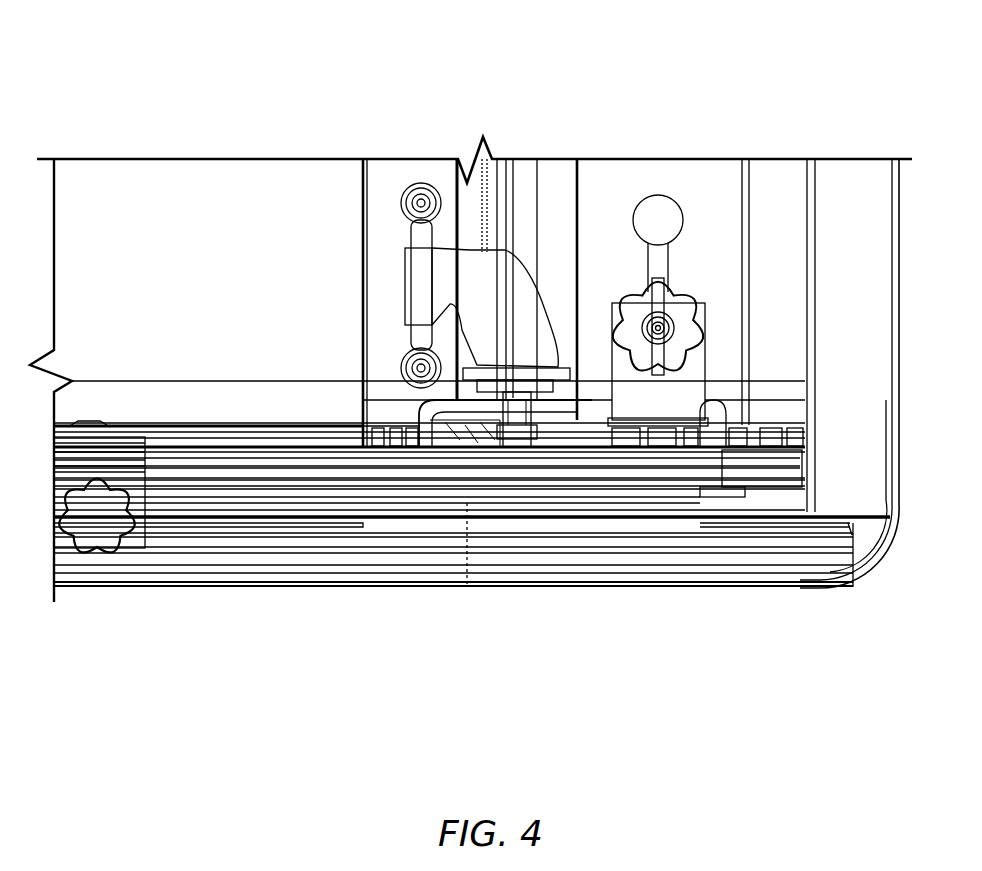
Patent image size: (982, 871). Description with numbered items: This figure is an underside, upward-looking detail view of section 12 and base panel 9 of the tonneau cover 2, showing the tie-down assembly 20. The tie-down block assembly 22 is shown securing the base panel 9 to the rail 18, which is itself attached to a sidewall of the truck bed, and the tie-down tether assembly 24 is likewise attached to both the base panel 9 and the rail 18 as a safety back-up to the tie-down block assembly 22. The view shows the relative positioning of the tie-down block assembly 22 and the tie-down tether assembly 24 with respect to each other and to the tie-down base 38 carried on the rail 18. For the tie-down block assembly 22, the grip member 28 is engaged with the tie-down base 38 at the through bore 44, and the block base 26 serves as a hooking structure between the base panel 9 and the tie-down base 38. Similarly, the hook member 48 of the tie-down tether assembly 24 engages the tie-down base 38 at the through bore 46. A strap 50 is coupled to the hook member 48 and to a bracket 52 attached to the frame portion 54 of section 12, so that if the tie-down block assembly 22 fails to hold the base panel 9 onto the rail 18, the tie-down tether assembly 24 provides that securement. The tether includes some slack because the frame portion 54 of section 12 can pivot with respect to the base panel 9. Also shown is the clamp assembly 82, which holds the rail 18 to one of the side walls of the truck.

The truck bed cover 2 is at (777, 100).
The base panel 9 is at (915, 225).
The section 12 is at (245, 278).
The rail 18 is at (718, 495).
The tie-down assembly 20 is at (540, 520).
The tie-down block assembly 22 is at (736, 363).
The tie-down tether assembly 24 is at (550, 262).
The block base 26 is at (612, 333).
The grip member 28 is at (690, 385).
The tie-down base 38 is at (424, 402).
The through bore 44 is at (720, 443).
The through bore 46 is at (426, 445).
The hook member 48 is at (515, 445).
The strap 50 is at (516, 325).
The bracket 52 is at (405, 237).
The frame portion 54 is at (425, 170).
The clamp assembly 82 is at (150, 508).